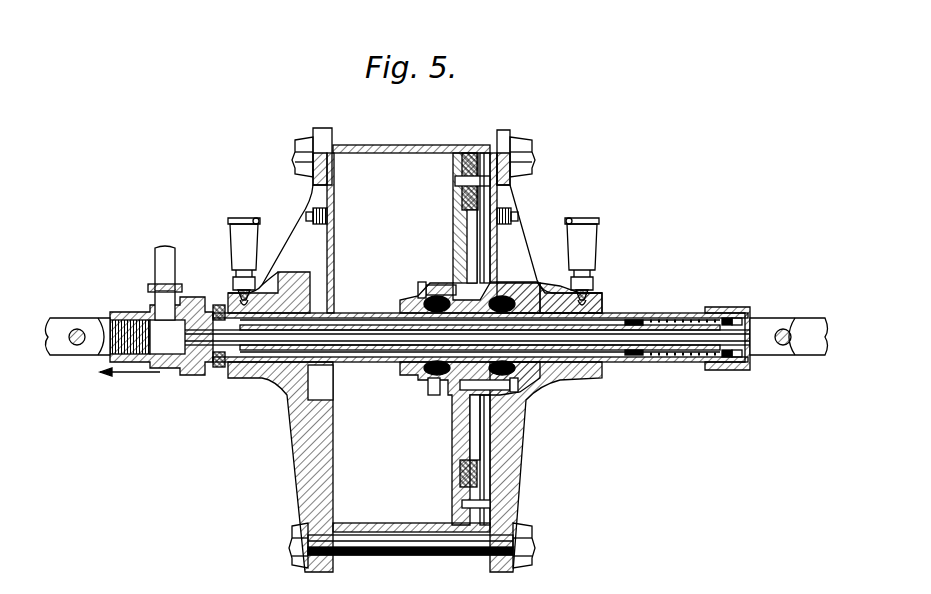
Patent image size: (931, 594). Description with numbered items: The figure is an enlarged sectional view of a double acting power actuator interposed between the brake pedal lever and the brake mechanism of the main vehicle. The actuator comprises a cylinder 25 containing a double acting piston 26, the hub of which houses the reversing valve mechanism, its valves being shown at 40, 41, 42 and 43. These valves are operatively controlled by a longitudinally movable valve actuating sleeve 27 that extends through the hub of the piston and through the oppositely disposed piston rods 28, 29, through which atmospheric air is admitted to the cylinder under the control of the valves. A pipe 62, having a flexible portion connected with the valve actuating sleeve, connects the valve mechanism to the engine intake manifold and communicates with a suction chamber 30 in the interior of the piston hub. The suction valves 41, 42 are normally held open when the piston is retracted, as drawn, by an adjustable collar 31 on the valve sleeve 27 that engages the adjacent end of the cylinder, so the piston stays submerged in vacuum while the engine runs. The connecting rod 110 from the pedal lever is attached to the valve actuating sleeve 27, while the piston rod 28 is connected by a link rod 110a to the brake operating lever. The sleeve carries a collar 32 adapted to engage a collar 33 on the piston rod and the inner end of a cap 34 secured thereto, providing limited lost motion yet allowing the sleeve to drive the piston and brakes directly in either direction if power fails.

The cylinder 25 is at (410, 138).
The double acting piston 26 is at (453, 212).
The valve actuating sleeve 27 is at (362, 346).
The piston rod 28 is at (668, 318).
The piston rod 29 is at (343, 318).
The suction chamber 30 is at (455, 390).
The adjustable collar 31 is at (220, 366).
The collar 32 is at (742, 368).
The collar 33 is at (728, 318).
The cap 34 is at (730, 368).
The valve 40 is at (420, 303).
The suction valve 41 is at (458, 283).
The suction valve 42 is at (498, 268).
The valve 43 is at (528, 292).
The pipe 62 is at (156, 254).
The link rod 110 is at (72, 320).
The link rod 110a is at (805, 325).